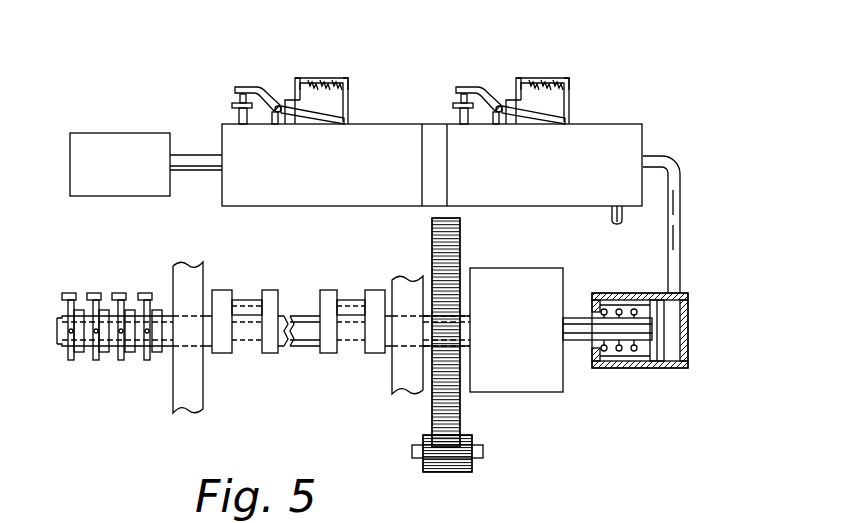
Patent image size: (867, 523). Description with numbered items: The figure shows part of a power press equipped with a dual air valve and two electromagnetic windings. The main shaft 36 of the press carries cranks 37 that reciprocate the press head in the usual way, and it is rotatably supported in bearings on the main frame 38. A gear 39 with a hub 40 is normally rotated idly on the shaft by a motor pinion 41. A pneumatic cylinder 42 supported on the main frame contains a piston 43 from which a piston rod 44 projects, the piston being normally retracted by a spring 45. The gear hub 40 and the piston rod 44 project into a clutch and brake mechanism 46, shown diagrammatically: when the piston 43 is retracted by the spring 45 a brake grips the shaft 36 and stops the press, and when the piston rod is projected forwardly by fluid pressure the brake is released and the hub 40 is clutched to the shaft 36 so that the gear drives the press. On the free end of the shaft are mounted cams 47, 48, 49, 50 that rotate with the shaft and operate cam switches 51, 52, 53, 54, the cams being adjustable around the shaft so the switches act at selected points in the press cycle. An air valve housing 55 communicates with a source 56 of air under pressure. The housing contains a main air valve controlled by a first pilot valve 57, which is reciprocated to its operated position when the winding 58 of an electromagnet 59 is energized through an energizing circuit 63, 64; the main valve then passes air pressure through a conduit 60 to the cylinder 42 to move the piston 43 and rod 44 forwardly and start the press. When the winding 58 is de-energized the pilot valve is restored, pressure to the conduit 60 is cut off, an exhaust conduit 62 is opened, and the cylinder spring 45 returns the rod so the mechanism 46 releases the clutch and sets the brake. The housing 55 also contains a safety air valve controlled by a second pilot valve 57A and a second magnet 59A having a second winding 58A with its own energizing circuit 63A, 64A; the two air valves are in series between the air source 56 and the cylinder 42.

The main shaft 36 is at (300, 350).
The cranks 37 is at (242, 300).
The main frame 38 is at (203, 387).
The gear 39 is at (432, 418).
The hub 40 is at (466, 300).
The motor pinion 41 is at (446, 472).
The pneumatic cylinder 42 is at (688, 344).
The piston 43 is at (653, 360).
The piston rod 44 is at (575, 318).
The spring 45 is at (623, 306).
The clutch and brake mechanism 46 is at (522, 392).
The cam 47 is at (70, 361).
The cam 48 is at (96, 361).
The cam 49 is at (121, 361).
The cam 50 is at (147, 361).
The cam switch 51 is at (68, 293).
The cam switch 52 is at (100, 281).
The cam switch 53 is at (124, 281).
The cam switch 54 is at (150, 281).
The air valve housing 55 is at (498, 198).
The air source 56 is at (120, 198).
The pilot valve 57 is at (458, 108).
The second pilot valve 57A is at (237, 107).
The winding 58 is at (545, 78).
The second winding 58A is at (321, 78).
The electromagnet 59 is at (571, 95).
The second magnet 59A is at (350, 95).
The air conduit 60 is at (682, 244).
The exhaust conduit 62 is at (612, 215).
The energizing circuit 63 is at (520, 78).
The energizing circuit 63A is at (297, 78).
The energizing circuit 64 is at (569, 78).
The energizing circuit 64A is at (348, 78).